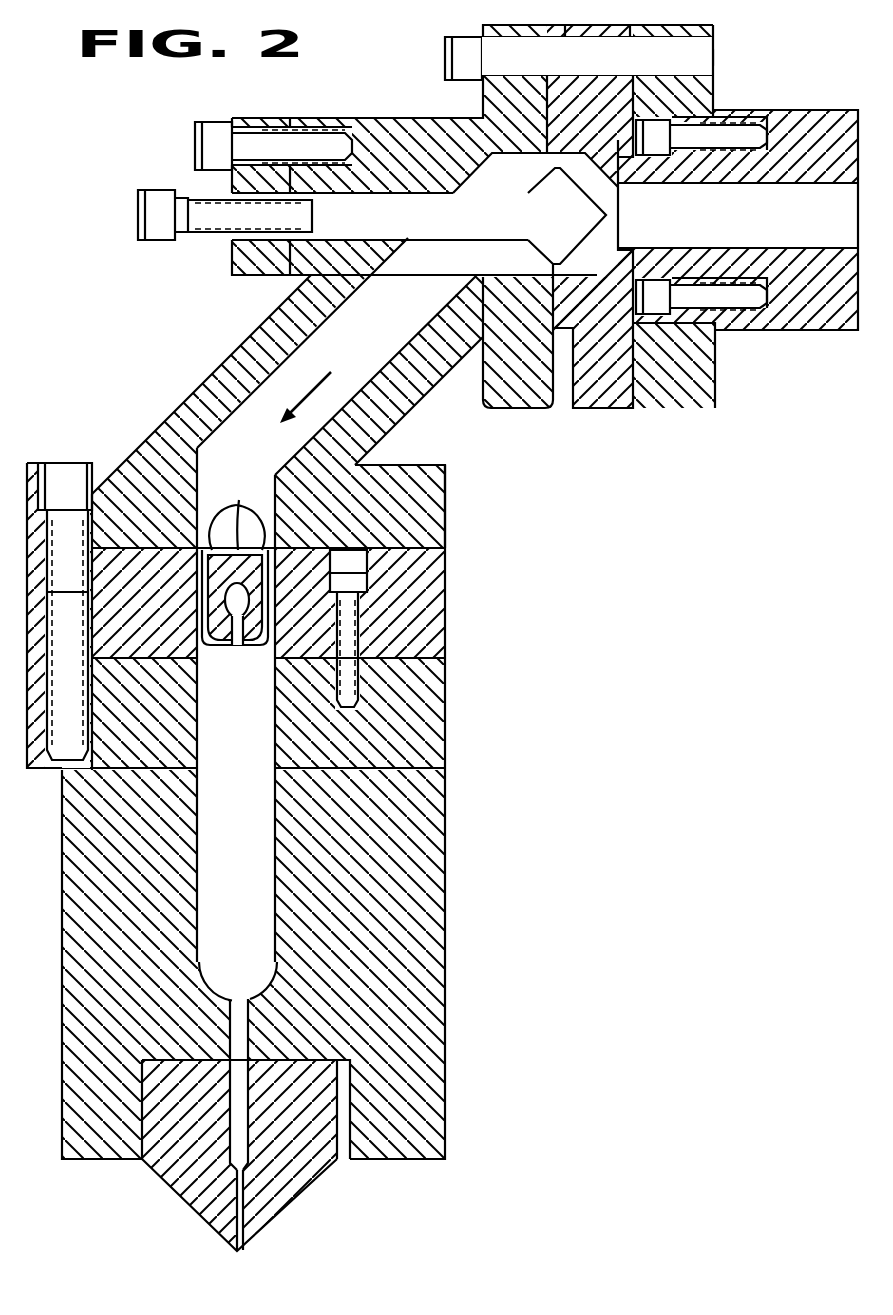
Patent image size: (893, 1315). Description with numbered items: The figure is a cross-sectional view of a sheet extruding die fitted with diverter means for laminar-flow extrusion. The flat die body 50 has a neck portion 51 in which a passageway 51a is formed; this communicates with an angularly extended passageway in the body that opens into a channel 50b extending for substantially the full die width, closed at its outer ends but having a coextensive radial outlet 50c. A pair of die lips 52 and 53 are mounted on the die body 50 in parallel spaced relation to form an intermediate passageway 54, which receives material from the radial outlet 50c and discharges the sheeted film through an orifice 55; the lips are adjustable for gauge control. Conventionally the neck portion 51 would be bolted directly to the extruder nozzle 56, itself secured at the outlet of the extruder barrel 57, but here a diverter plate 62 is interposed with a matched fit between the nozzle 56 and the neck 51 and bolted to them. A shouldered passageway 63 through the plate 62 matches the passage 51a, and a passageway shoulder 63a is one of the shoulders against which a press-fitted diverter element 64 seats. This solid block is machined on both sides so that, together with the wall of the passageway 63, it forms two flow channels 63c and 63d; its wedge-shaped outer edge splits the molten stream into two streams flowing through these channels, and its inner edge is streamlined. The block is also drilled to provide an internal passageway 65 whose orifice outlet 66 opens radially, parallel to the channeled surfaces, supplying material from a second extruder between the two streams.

The die body 50 is at (72, 1117).
The channel 50b is at (262, 912).
The radial outlet 50c is at (252, 985).
The neck portion 51 is at (428, 728).
The passageway 51a is at (200, 735).
The die lip 52 is at (280, 1210).
The die lip 53 is at (213, 1212).
The intermediate passageway 54 is at (237, 1120).
The orifice 55 is at (239, 1251).
The extruder nozzle 56 is at (214, 371).
The extruder barrel 57 is at (803, 330).
The diverter plate 62 is at (430, 628).
The shouldered passageway 63 is at (205, 603).
The passageway shoulder 63a is at (213, 648).
The flow channel 63c is at (215, 520).
The flow channel 63d is at (257, 520).
The diverter element 64 is at (240, 500).
The internal passageway 65 is at (246, 604).
The orifice outlet 66 is at (236, 646).